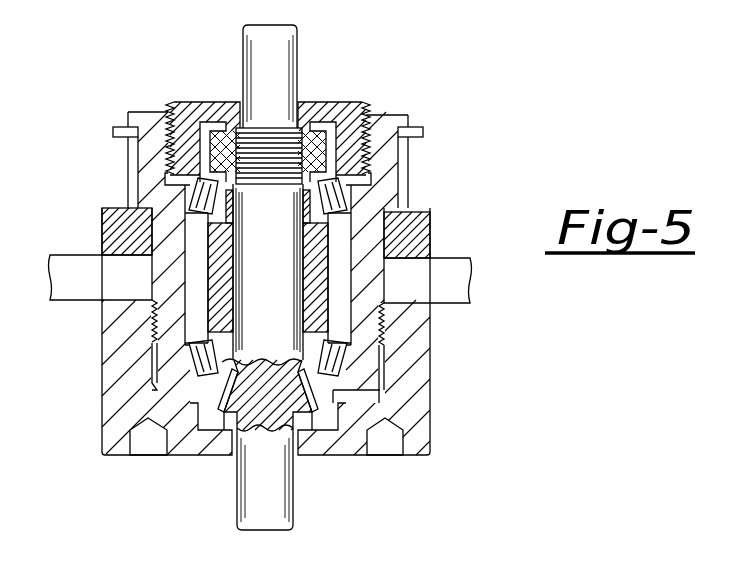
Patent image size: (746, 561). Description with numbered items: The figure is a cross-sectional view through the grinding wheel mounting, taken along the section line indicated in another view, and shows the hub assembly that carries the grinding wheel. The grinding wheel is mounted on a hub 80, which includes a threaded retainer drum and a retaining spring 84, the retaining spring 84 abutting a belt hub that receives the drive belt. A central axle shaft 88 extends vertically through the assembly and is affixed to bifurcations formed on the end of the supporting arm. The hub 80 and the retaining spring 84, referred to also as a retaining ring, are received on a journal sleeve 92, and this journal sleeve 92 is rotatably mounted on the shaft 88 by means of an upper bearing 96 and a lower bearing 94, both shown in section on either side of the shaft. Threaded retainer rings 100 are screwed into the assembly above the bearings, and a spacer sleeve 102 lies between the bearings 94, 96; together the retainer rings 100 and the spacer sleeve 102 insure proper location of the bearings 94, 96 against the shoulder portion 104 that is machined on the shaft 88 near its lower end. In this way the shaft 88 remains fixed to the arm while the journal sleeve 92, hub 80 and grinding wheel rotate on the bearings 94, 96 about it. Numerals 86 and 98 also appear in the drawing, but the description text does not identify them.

The hub 80 is at (102, 407).
The retaining spring 84 is at (102, 225).
The screw 86 is at (128, 147).
The central axle shaft 88 is at (293, 510).
The journal sleeve 92 is at (140, 112).
The bearing 94 is at (190, 362).
The bearing 96 is at (195, 200).
The nut 98 is at (318, 100).
The threaded retainer ring 100 is at (212, 128).
The spacer sleeve 102 is at (318, 262).
The shoulder portion 104 is at (207, 408).